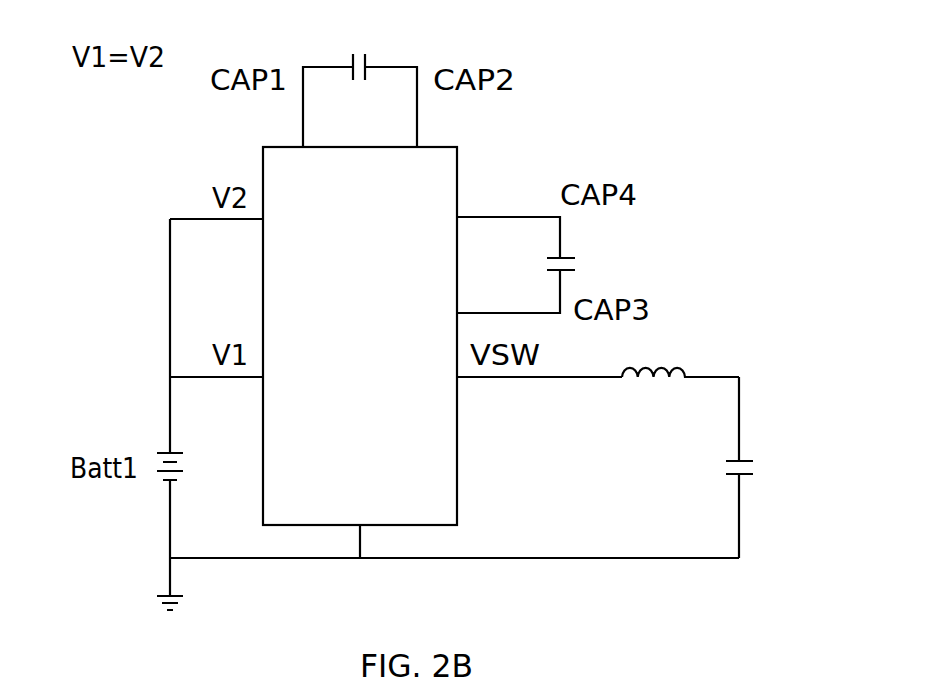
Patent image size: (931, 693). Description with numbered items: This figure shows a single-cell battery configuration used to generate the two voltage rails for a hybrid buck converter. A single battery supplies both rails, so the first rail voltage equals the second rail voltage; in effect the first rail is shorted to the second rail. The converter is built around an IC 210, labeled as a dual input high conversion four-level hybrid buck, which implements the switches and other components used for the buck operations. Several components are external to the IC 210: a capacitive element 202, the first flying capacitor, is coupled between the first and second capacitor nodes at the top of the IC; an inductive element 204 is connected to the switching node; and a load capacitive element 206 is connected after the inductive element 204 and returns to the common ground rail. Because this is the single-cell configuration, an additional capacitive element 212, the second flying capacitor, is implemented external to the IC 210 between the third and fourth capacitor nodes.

The capacitive element 202 is at (368, 62).
The inductive element 204 is at (677, 368).
The load capacitive element 206 is at (743, 462).
The IC 210 is at (457, 170).
The capacitive element 212 is at (565, 258).